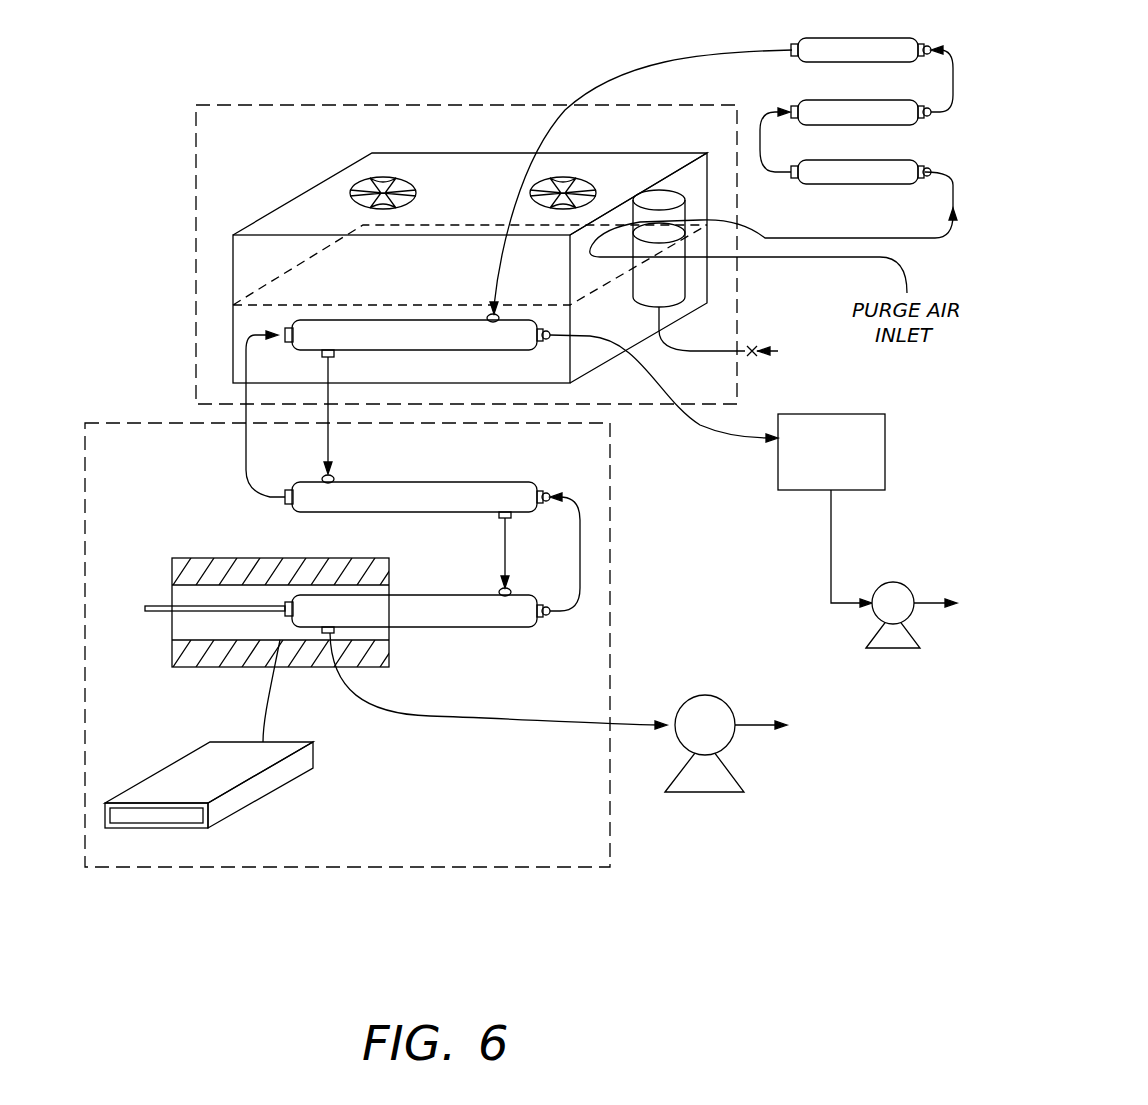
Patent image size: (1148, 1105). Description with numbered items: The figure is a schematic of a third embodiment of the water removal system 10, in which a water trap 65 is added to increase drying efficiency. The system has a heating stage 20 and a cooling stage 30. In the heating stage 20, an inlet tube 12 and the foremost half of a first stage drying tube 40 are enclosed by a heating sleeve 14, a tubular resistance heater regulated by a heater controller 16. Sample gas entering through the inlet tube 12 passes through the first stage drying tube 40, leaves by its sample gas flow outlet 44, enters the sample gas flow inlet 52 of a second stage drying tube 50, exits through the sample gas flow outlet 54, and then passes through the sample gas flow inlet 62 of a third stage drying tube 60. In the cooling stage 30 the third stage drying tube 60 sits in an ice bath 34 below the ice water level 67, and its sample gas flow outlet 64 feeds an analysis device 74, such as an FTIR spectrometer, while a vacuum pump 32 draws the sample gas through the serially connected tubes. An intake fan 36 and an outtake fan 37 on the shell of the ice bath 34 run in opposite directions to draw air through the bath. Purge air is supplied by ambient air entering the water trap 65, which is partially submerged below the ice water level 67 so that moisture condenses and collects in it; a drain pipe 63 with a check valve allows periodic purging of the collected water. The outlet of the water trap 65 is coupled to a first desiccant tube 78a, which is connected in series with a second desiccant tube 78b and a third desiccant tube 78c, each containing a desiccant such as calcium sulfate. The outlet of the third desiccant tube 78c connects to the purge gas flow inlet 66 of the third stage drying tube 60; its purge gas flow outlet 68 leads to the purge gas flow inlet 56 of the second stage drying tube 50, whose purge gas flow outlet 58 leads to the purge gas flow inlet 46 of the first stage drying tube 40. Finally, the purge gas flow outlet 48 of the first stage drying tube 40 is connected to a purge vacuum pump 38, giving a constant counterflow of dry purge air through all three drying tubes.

The water removal system 10 is at (744, 840).
The inlet tube 12 is at (145, 609).
The heating sleeve 14 is at (205, 668).
The heater controller 16 is at (262, 797).
The heating stage 20 is at (258, 876).
The cooling stage 30 is at (155, 196).
The vacuum pump 32 is at (893, 650).
The ice bath 34 is at (470, 254).
The intake fan 36 is at (588, 178).
The outtake fan 37 is at (405, 180).
The purge vacuum pump 38 is at (705, 795).
The first stage drying tube 40 is at (433, 620).
The sample gas flow outlet 44 is at (550, 604).
The purge gas flow inlet 46 is at (498, 590).
The purge gas flow outlet 48 is at (320, 637).
The second stage drying tube 50 is at (402, 499).
The sample gas flow inlet 52 is at (548, 490).
The sample gas flow outlet 54 is at (287, 505).
The purge gas flow inlet 56 is at (333, 470).
The purge gas flow outlet 58 is at (517, 517).
The third stage drying tube 60 is at (456, 324).
The sample gas flow inlet 62 is at (288, 325).
The drain pipe 63 is at (763, 357).
The sample gas flow outlet 64 is at (552, 330).
The water trap 65 is at (688, 268).
The purge gas flow inlet 66 is at (498, 315).
The ice water level 67 is at (248, 303).
The purge gas flow outlet 68 is at (340, 356).
The analysis device 74 is at (831, 413).
The first desiccant tube 78a is at (858, 186).
The second desiccant tube 78b is at (800, 102).
The third desiccant tube 78c is at (800, 40).